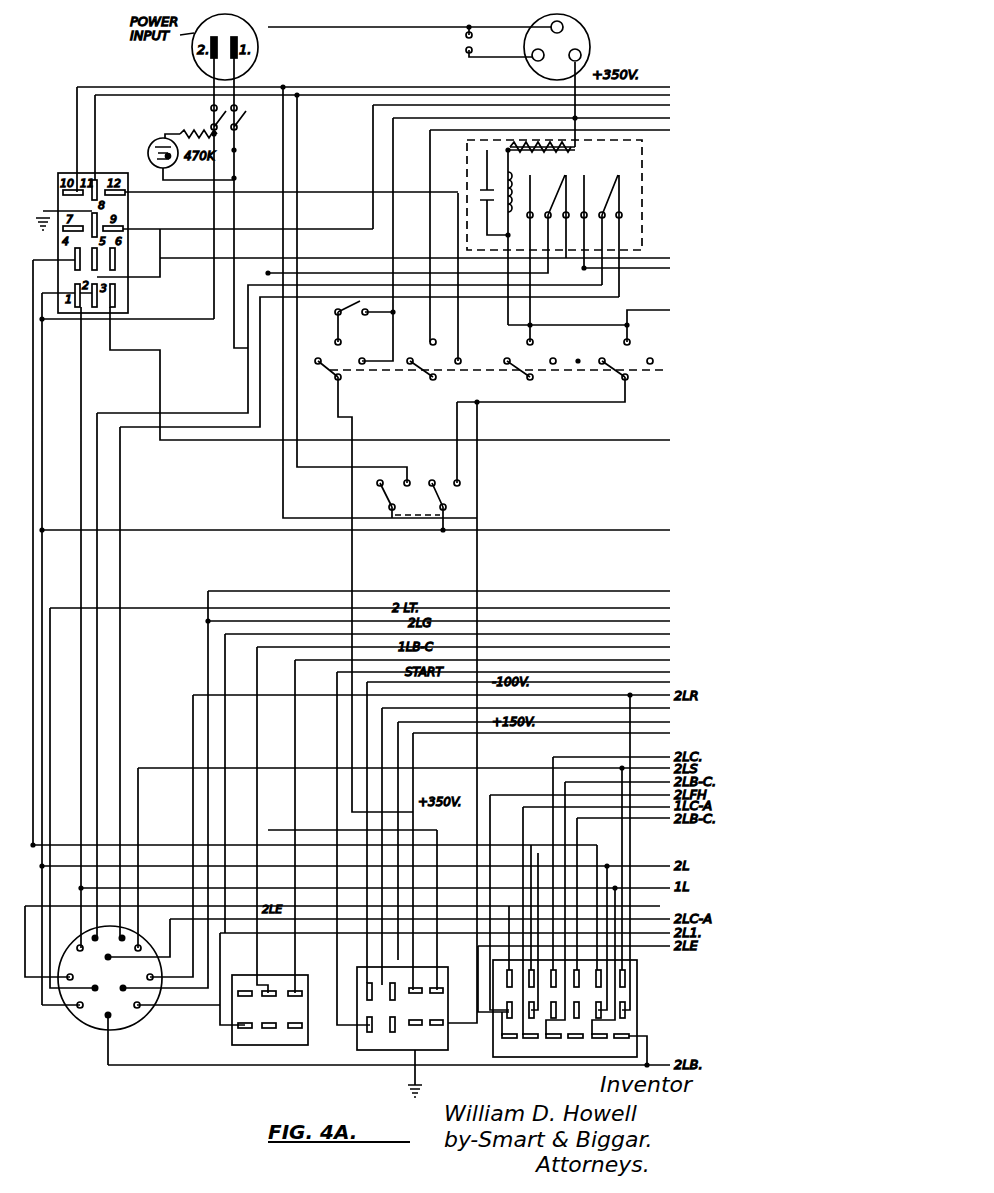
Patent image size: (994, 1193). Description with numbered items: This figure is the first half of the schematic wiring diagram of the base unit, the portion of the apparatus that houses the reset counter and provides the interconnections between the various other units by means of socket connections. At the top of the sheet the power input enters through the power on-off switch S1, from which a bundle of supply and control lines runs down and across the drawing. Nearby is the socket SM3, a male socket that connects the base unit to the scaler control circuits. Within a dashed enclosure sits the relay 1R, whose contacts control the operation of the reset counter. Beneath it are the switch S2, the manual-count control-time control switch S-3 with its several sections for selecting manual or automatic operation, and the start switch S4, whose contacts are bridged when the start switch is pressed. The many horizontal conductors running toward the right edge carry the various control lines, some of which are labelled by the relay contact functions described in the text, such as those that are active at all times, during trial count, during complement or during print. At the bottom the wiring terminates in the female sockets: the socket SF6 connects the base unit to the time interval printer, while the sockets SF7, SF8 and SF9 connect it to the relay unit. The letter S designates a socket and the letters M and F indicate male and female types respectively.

The power on-off switch S1 is at (212, 125).
The socket connection to scaler control circuits SM3 is at (591, 48).
The relay 1R is at (554, 195).
The switch S2 is at (351, 319).
The manual-count control-time control switch S-3 is at (490, 368).
The start switch S4 is at (422, 502).
The socket connection to time interval printer SF6 is at (78, 1024).
The socket connection to relay unit SF7 is at (290, 1050).
The socket connection to relay unit SF8 is at (406, 1054).
The socket connection to relay unit SF9 is at (490, 1054).